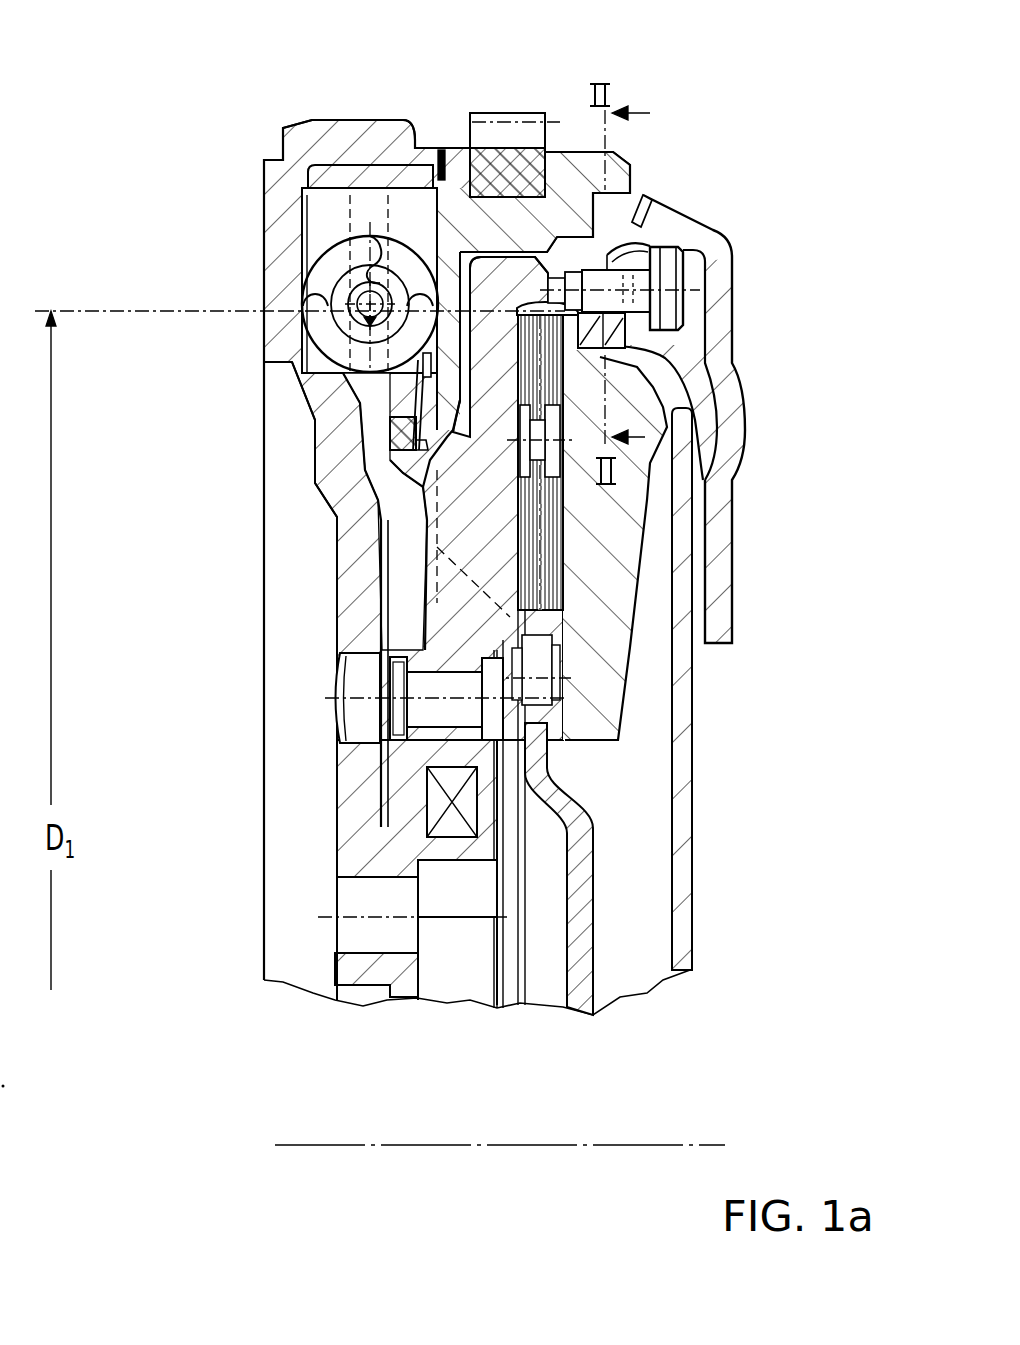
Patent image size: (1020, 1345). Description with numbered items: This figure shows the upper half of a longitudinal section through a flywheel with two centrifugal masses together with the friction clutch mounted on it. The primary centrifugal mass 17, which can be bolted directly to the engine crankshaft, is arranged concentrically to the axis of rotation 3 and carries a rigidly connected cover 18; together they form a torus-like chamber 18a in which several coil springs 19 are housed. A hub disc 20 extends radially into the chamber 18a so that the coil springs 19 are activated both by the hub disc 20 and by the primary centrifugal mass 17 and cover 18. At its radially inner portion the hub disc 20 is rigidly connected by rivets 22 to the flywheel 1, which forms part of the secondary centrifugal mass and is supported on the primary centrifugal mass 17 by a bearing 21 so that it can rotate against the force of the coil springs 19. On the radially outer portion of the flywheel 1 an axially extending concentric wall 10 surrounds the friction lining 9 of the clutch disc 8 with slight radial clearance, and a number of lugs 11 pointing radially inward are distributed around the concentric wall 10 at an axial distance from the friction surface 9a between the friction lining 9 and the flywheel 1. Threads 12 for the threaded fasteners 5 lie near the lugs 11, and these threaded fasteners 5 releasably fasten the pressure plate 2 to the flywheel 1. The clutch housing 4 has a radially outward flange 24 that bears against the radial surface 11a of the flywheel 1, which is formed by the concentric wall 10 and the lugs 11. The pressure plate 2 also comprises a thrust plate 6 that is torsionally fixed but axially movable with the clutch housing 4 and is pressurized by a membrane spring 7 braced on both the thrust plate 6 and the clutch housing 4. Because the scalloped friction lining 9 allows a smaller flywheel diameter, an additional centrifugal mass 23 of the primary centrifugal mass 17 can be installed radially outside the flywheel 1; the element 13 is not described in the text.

The flywheel 1 is at (500, 468).
The pressure plate 2 is at (803, 275).
The axis of rotation 3 is at (273, 1144).
The clutch housing 4 is at (744, 425).
The threaded fasteners 5 is at (672, 302).
The thrust plate 6 is at (613, 692).
The membrane spring 7 is at (683, 728).
The clutch disc 8 is at (590, 853).
The friction lining 9 is at (563, 503).
The friction surface 9a is at (390, 437).
The concentric wall 10 is at (584, 245).
The lugs 11 is at (613, 333).
The radial surface 11a is at (632, 258).
The threads 12 is at (608, 266).
The hub plate 13 is at (550, 306).
The primary centrifugal mass 17 is at (264, 198).
The cover 18 is at (378, 176).
The torus-like chamber 18a is at (318, 207).
The coil springs 19 is at (336, 298).
The hub disc 20 is at (400, 580).
The bearing 21 is at (455, 805).
The rivets 22 is at (420, 712).
The additional centrifugal mass 23 is at (536, 212).
The flange 24 is at (630, 254).